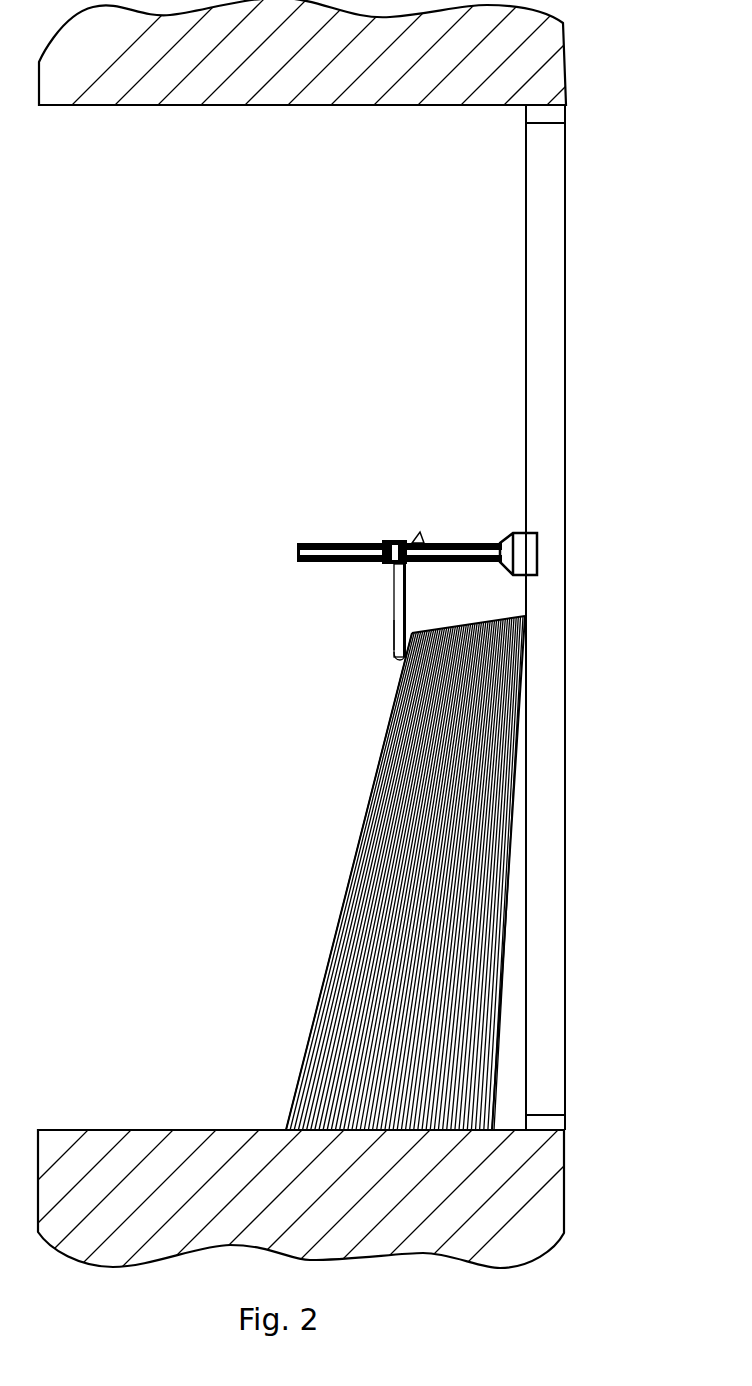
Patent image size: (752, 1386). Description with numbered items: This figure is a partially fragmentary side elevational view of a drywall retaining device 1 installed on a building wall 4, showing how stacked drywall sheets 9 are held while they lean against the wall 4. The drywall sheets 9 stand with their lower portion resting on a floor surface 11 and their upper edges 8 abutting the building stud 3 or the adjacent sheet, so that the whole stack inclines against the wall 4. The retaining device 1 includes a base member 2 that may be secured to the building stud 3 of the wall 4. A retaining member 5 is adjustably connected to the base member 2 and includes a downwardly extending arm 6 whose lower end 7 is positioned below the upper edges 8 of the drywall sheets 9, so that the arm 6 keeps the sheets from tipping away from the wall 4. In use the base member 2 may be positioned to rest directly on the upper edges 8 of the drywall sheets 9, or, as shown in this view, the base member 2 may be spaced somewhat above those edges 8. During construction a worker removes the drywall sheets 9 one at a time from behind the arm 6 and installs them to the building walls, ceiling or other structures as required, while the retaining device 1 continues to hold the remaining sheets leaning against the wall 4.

The drywall retaining device 1 is at (392, 595).
The base member 2 is at (470, 541).
The building stud 3 is at (543, 377).
The wall 4 is at (566, 456).
The retaining member 5 is at (384, 637).
The downwardly extending arm 6 is at (393, 600).
The lower end 7 is at (393, 656).
The upper edges 8 is at (423, 630).
The drywall sheets 9 is at (360, 837).
The floor surface 11 is at (170, 1130).